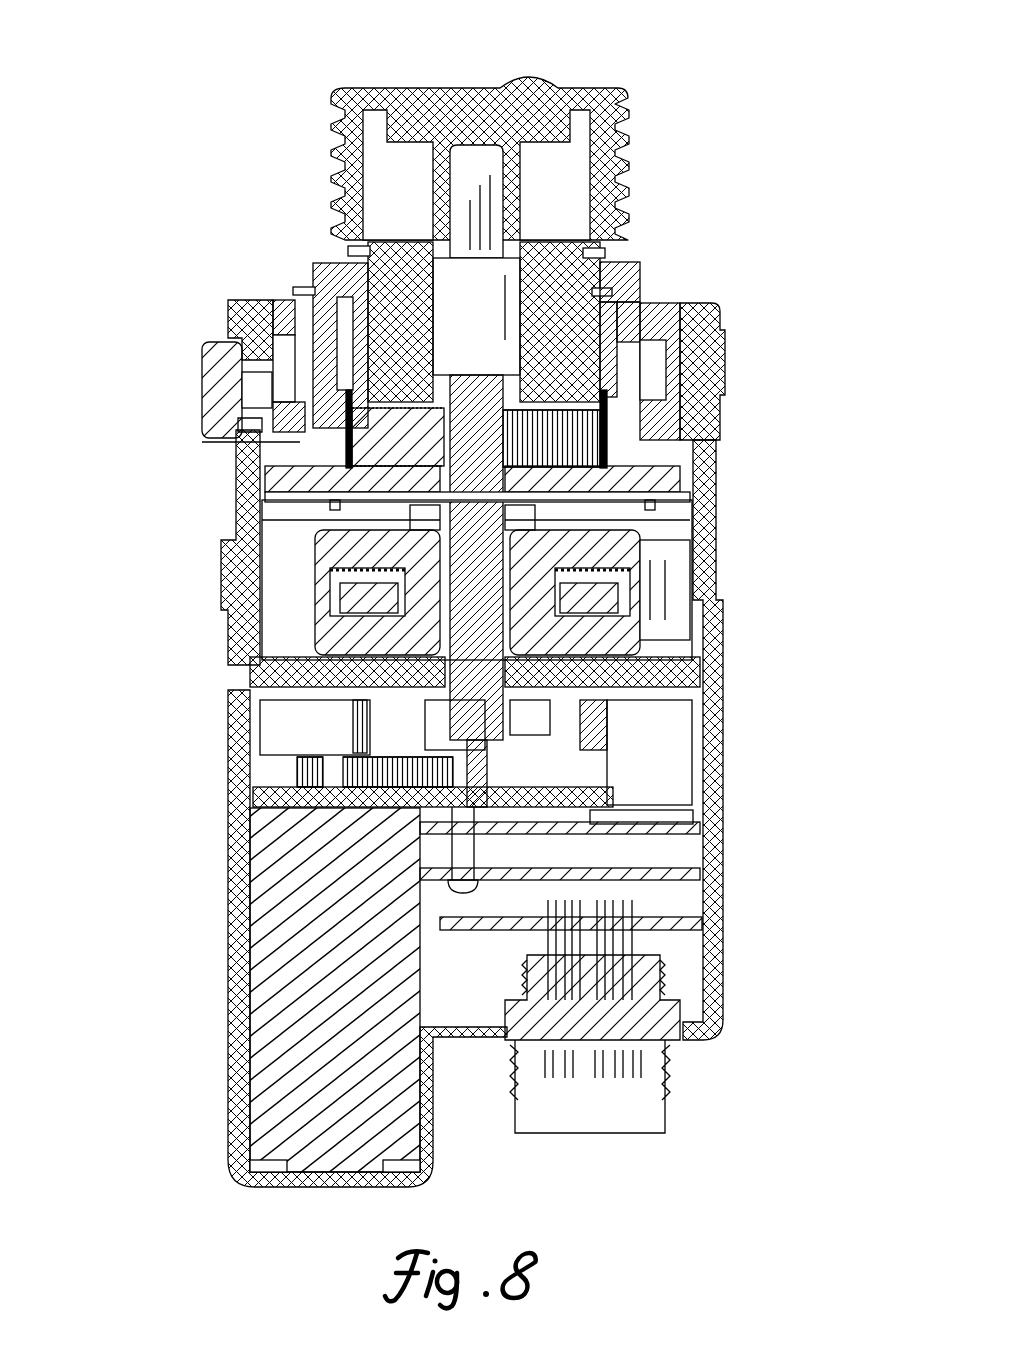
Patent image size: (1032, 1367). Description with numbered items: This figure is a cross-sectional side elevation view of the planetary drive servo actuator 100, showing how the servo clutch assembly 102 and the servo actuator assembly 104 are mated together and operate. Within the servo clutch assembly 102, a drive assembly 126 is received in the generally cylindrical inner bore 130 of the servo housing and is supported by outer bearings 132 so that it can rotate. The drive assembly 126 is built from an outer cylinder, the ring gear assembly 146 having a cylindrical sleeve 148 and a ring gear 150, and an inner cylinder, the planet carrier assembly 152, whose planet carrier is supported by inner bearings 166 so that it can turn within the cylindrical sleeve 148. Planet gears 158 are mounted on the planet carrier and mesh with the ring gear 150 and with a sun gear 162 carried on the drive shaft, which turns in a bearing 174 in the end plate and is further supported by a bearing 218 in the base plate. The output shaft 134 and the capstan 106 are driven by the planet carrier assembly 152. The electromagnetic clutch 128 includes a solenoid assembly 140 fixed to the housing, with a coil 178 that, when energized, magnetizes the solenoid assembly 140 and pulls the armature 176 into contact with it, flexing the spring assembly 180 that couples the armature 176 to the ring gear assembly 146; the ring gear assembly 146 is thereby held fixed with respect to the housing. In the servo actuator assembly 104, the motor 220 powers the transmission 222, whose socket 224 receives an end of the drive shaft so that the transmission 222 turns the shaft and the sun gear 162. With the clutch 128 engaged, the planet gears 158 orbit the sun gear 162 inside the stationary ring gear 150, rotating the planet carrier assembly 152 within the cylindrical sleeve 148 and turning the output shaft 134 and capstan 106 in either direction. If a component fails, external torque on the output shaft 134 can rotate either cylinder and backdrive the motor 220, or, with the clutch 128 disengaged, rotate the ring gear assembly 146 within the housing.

The planetary drive servo actuator 100 is at (803, 84).
The servo clutch assembly 102 is at (718, 305).
The servo actuator assembly 104 is at (723, 830).
The capstan 106 is at (593, 90).
The drive assembly 126 is at (695, 472).
The electromagnetic clutch 128 is at (680, 580).
The inner bore 130 is at (660, 520).
The bearings 132 is at (240, 400).
The output shaft 134 is at (445, 130).
The solenoid assembly 140 is at (600, 650).
The ring gear assembly 146 is at (722, 345).
The cylindrical sleeve 148 is at (637, 292).
The ring gear 150 is at (680, 405).
The planet carrier assembly 152 is at (588, 248).
The planet gears 158 is at (640, 372).
The sun gear 162 is at (440, 415).
The bearings 166 is at (345, 315).
The bearing 174 is at (540, 437).
The armature 176 is at (330, 548).
The coil 178 is at (620, 598).
The spring assembly 180 is at (640, 565).
The bearing 218 is at (580, 725).
The motor 220 is at (308, 925).
The transmission 222 is at (300, 775).
The socket 224 is at (440, 690).